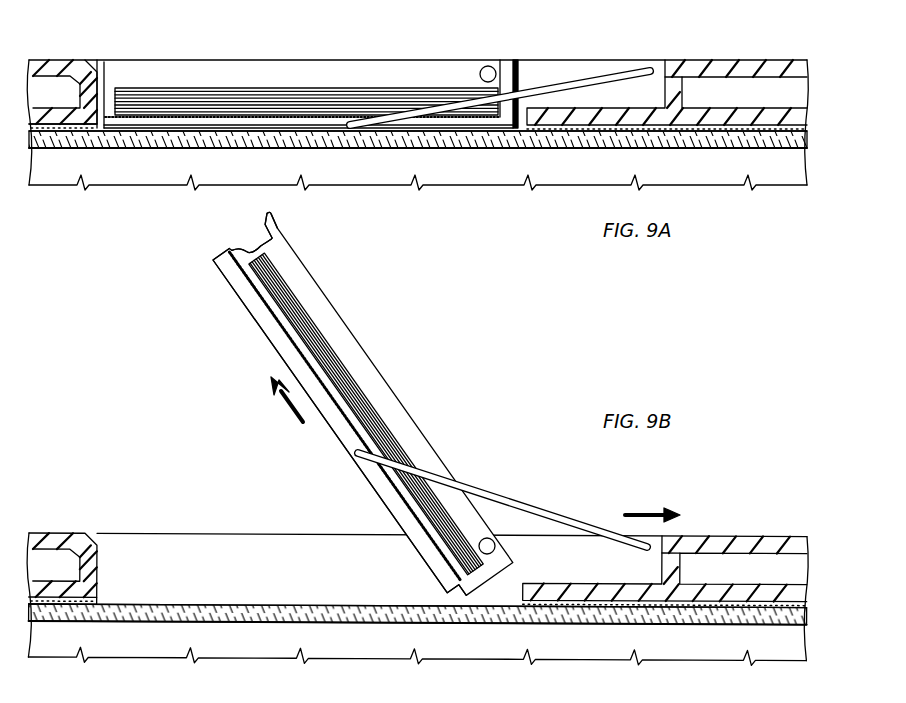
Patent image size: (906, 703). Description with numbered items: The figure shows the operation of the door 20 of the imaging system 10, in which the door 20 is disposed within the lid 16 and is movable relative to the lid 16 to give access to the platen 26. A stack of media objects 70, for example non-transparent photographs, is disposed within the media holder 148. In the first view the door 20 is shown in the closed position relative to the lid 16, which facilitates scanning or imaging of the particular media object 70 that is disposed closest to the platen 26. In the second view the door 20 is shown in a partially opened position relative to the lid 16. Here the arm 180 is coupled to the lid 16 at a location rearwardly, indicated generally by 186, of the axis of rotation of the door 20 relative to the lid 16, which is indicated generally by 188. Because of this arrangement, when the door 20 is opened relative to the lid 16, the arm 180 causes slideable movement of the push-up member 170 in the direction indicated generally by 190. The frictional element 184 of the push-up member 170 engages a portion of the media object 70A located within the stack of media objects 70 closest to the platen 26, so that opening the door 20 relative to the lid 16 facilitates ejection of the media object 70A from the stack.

In FIG. 9A, the imaging system 10 is at (118, 197).
In FIG. 9B, the imaging system 10 is at (115, 667).
In FIG. 9A, the lid 16 is at (50, 60).
In FIG. 9B, the lid 16 is at (48, 533).
In FIG. 9A, the door 20 is at (280, 54).
In FIG. 9B, the door 20 is at (383, 367).
In FIG. 9A, the platen 26 is at (193, 132).
In FIG. 9B, the platen 26 is at (213, 603).
In FIG. 9A, the stack of media objects 70 is at (143, 88).
In FIG. 9B, the stack of media objects 70 is at (310, 321).
In FIG. 9B, the media object 70A is at (262, 252).
In FIG. 9A, the media holder 148 is at (456, 130).
In FIG. 9B, the media holder 148 is at (459, 403).
In FIG. 9B, the push-up member 170 is at (247, 318).
In FIG. 9A, the arm 180 is at (575, 74).
In FIG. 9B, the arm 180 is at (495, 493).
In FIG. 9B, the frictional element 184 is at (229, 249).
In FIG. 9B, the rearward location 186 is at (646, 511).
In FIG. 9B, the axis of rotation 188 is at (496, 545).
In FIG. 9B, the direction of slideable movement 190 is at (288, 408).